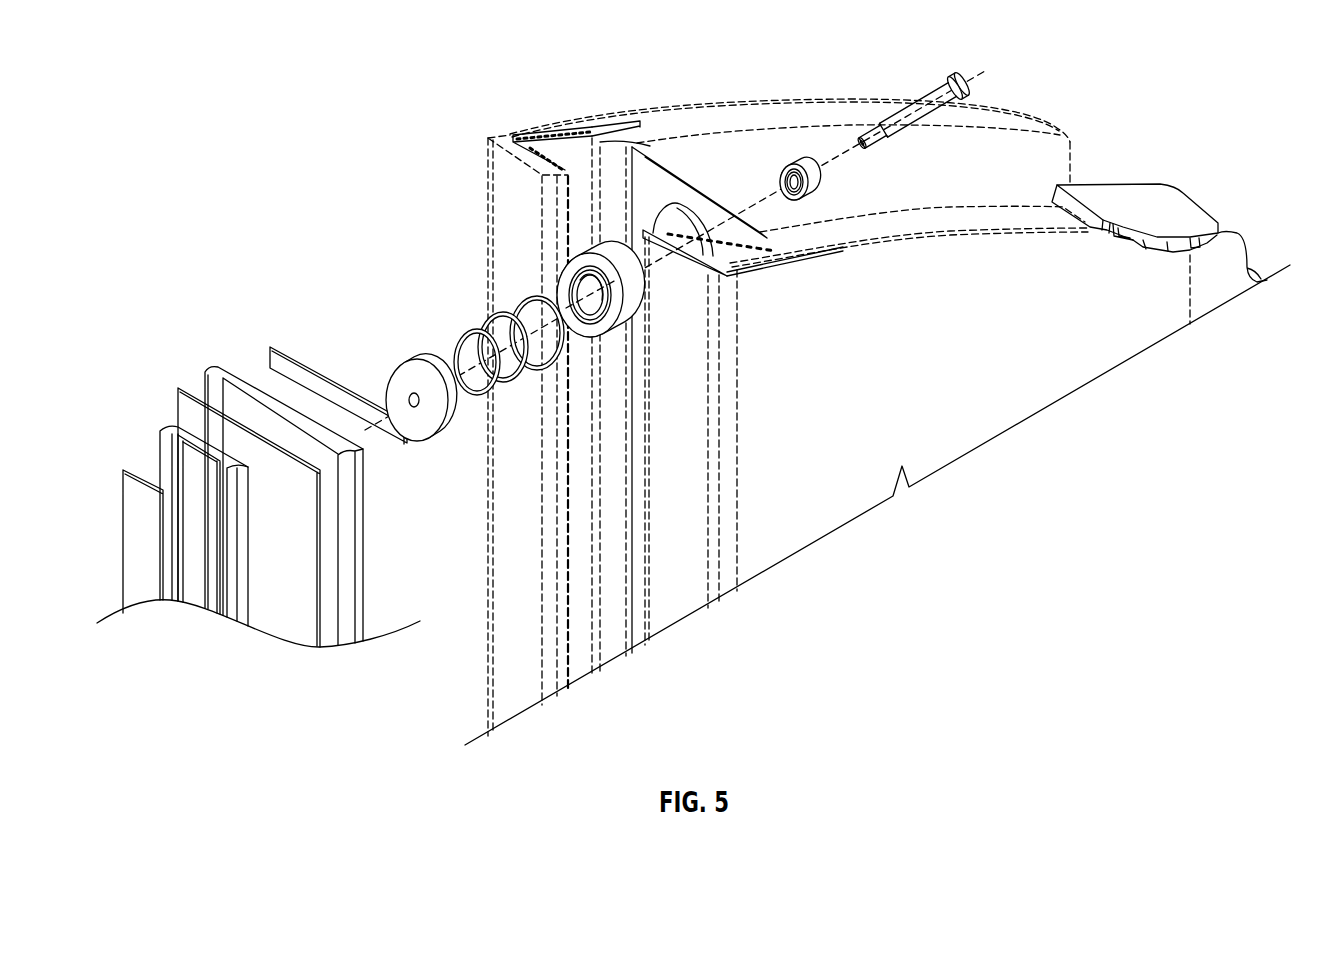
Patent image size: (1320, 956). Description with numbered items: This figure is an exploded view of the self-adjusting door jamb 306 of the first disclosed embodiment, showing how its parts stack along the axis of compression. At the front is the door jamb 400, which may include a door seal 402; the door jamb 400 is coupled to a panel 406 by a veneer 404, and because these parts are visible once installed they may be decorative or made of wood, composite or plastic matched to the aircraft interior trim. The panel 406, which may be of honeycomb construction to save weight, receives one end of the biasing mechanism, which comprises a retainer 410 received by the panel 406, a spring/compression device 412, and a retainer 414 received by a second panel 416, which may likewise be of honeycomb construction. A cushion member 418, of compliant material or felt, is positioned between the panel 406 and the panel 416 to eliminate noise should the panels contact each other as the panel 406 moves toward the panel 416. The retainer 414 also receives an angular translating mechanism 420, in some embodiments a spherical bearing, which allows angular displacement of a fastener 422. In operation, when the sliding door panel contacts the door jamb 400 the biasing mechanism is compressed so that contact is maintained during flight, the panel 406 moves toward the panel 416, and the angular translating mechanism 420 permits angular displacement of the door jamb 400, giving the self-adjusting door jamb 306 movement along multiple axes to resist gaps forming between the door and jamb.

The self-adjusting door jamb 306 is at (388, 181).
The door jamb 400 is at (172, 426).
The door seal 402 is at (143, 476).
The veneer 404 is at (192, 390).
The panel 406 is at (226, 368).
The retainer 410 is at (410, 352).
The spring/compression device 412 is at (473, 327).
The retainer 414 is at (587, 250).
The panel 416 is at (690, 188).
The cushion member 418 is at (270, 346).
The angular translating mechanism 420 is at (822, 174).
The fastener 422 is at (937, 83).